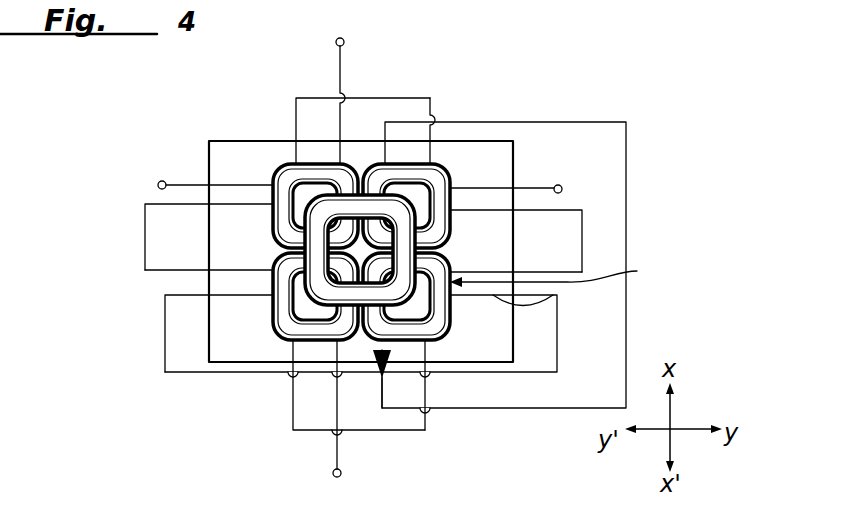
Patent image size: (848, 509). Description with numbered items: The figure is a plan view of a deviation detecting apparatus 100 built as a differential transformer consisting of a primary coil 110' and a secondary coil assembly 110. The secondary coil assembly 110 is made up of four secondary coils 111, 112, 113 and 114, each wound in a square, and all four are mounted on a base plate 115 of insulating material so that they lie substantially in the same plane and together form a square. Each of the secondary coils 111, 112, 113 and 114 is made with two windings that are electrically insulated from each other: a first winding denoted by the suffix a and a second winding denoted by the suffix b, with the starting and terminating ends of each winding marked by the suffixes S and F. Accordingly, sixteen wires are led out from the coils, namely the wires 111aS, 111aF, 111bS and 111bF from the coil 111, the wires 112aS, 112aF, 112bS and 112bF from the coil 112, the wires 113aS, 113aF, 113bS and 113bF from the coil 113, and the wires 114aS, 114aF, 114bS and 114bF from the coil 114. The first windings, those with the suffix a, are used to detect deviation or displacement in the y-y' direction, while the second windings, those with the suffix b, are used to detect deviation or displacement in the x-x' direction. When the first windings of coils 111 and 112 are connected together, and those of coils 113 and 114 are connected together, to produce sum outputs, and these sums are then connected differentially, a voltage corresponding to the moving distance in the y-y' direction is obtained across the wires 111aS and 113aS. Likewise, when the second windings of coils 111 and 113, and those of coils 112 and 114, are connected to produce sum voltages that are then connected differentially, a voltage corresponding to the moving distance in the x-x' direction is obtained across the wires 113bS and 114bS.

The deviation detecting apparatus 100 is at (280, 330).
The secondary coil assembly 110 is at (565, 273).
The primary coil 110' is at (464, 169).
The secondary coil 111 is at (562, 190).
The starting end of first winding of secondary coil 111 111aS is at (482, 187).
The terminating end of first winding of secondary coil 111 111aF is at (473, 211).
The starting end of second winding of secondary coil 111 111bS is at (431, 152).
The terminating end of second winding of secondary coil 111 111bF is at (386, 150).
The secondary coil 112 is at (447, 318).
The starting end of first winding of secondary coil 112 112aS is at (490, 271).
The terminating end of first winding of secondary coil 112 112aF is at (553, 298).
The starting end of second winding of secondary coil 112 112bS is at (428, 354).
The terminating end of second winding of secondary coil 112 112bF is at (388, 352).
The secondary coil 113 is at (280, 165).
The starting end of first winding of secondary coil 113 113aS is at (200, 185).
The terminating end of first winding of secondary coil 113 113aF is at (228, 204).
The starting end of second winding of secondary coil 113 113bS is at (365, 135).
The terminating end of second winding of secondary coil 113 113bF is at (295, 110).
The secondary coil 114 is at (273, 315).
The starting end of first winding of secondary coil 114 114aS is at (218, 269).
The terminating end of first winding of secondary coil 114 114aF is at (218, 294).
The starting end of second winding of secondary coil 114 114bS is at (340, 352).
The terminating end of second winding of secondary coil 114 114bF is at (293, 348).
The base plate 115 is at (212, 141).